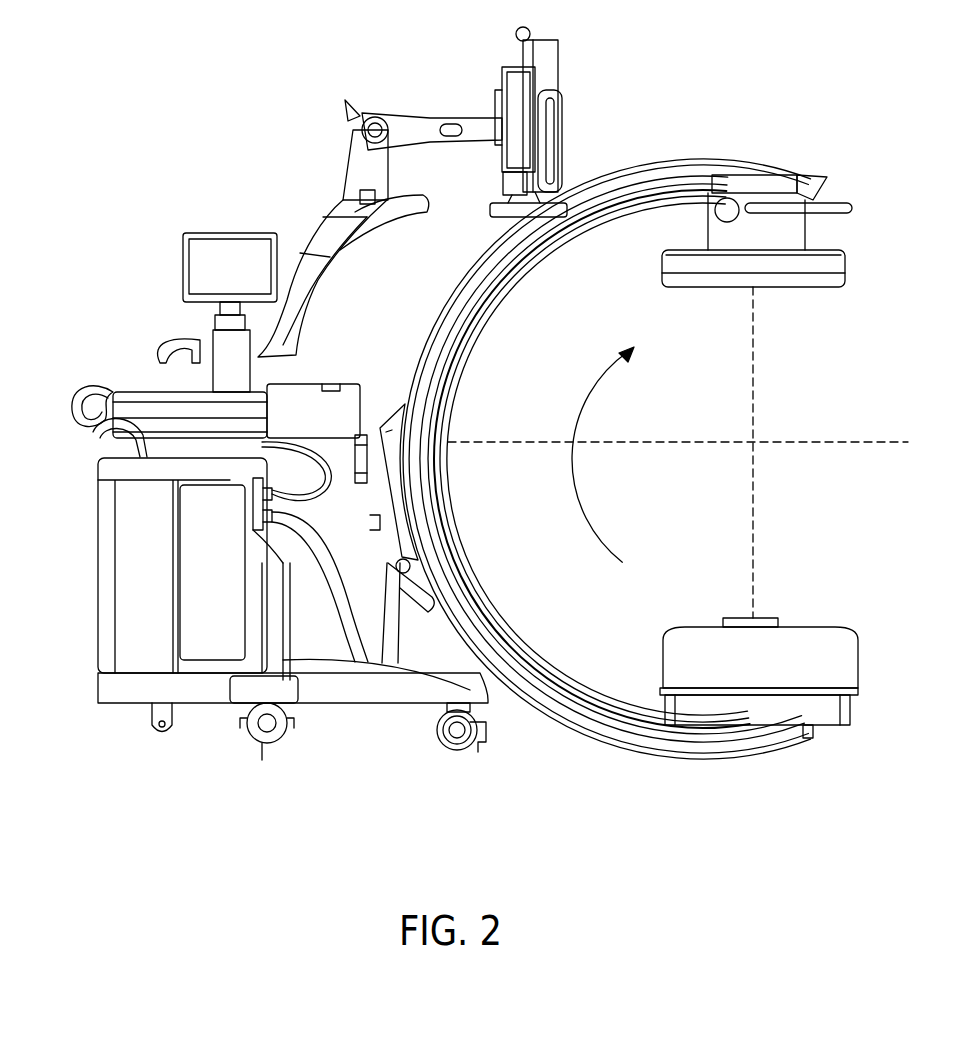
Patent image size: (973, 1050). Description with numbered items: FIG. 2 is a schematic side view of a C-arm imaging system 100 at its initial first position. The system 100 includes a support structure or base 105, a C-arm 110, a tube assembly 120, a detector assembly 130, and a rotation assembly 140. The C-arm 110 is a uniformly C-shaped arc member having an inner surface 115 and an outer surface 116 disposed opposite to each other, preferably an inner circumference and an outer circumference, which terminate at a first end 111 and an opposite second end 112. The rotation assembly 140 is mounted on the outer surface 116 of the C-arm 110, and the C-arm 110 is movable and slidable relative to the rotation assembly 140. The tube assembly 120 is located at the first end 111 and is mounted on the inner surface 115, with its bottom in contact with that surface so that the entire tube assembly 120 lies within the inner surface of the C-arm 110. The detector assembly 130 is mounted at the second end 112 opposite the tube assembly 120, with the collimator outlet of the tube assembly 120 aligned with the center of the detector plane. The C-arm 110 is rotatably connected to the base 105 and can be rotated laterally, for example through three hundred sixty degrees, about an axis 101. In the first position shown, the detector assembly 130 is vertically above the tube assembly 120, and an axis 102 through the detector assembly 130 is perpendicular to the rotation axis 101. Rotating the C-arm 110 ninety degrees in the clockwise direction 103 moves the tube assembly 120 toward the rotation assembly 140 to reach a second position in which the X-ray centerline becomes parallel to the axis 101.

The C-arm imaging system 100 is at (222, 100).
The axis 101 is at (904, 440).
The axis 102 is at (756, 575).
The clockwise direction 103 is at (624, 454).
The base 105 is at (130, 580).
The C-arm 110 is at (432, 482).
The first end 111 is at (775, 762).
The second end 112 is at (790, 157).
The inner surface 115 is at (480, 328).
The outer surface 116 is at (442, 311).
The tube assembly 120 is at (815, 660).
The detector assembly 130 is at (760, 262).
The rotation assembly 140 is at (385, 402).